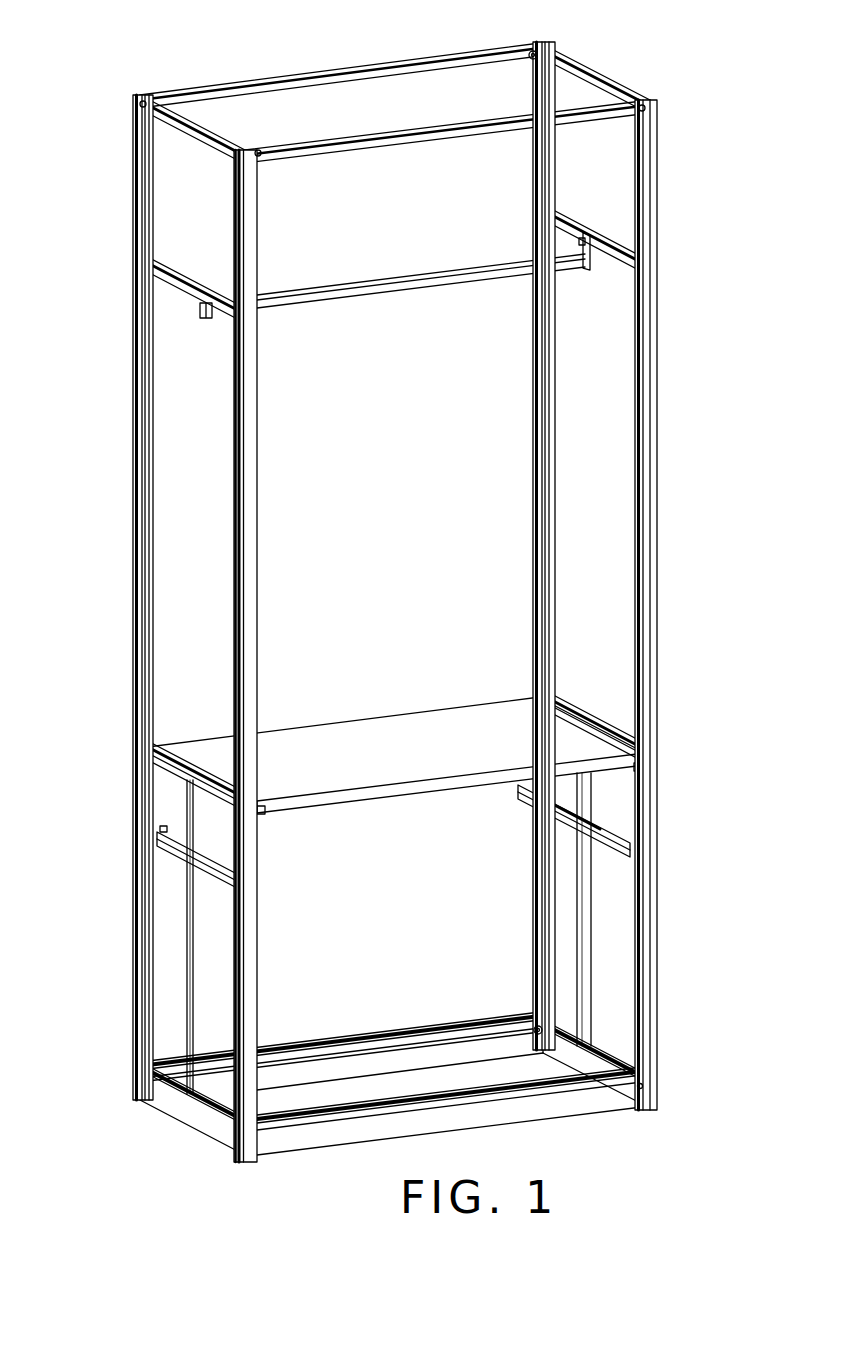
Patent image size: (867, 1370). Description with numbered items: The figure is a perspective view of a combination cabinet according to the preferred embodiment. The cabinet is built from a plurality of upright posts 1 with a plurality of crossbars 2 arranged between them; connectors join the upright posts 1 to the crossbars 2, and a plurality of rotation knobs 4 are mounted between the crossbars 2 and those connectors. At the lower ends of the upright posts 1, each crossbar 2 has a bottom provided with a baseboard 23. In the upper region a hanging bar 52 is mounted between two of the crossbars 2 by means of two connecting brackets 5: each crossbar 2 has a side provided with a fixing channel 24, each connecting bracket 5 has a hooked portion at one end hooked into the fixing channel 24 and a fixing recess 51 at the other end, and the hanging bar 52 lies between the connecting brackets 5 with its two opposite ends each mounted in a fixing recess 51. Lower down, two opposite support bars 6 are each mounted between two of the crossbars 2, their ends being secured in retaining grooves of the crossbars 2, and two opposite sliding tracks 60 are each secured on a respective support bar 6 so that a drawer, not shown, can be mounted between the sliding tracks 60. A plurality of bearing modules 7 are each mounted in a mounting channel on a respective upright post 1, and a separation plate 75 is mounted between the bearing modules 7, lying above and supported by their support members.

The upright post 1 is at (143, 187).
The crossbar 2 is at (360, 64).
The rotation knob 4 is at (143, 105).
The connecting bracket 5 is at (200, 312).
The support bar 6 is at (192, 897).
The bearing module 7 is at (640, 770).
The baseboard 23 is at (165, 1103).
The fixing channel 24 is at (540, 224).
The fixing recess 51 is at (580, 242).
The hanging bar 52 is at (398, 276).
The sliding track 60 is at (180, 843).
The separation plate 75 is at (432, 720).